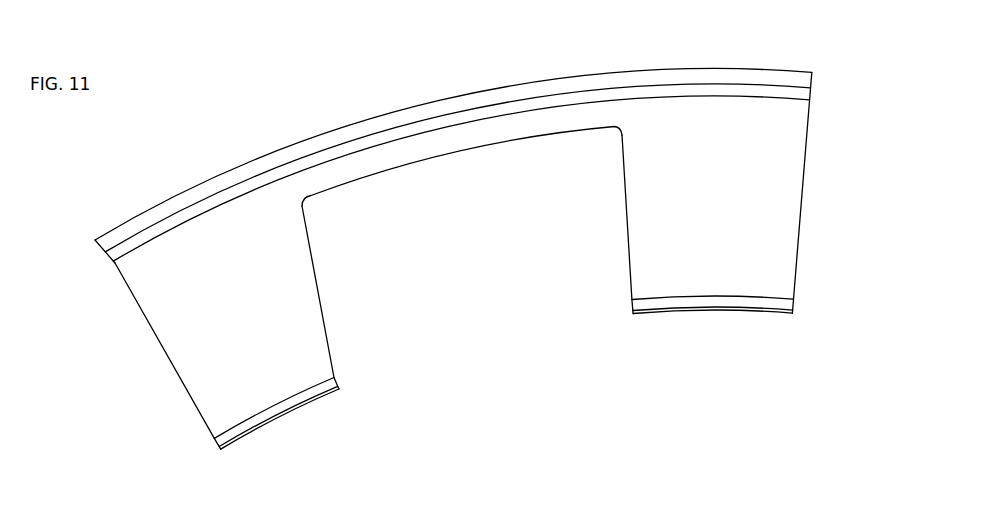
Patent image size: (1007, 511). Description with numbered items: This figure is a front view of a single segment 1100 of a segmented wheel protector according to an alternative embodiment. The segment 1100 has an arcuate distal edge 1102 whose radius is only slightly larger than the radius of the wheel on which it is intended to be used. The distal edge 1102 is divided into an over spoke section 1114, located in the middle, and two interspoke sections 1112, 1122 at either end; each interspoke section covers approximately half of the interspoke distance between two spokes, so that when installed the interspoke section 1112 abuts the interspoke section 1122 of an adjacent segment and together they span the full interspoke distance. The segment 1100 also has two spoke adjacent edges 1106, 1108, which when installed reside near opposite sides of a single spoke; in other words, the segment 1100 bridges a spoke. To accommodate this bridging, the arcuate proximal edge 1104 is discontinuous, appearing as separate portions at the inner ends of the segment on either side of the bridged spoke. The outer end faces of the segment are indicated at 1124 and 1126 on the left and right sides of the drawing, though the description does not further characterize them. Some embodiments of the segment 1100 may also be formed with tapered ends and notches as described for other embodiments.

The segment 1100 is at (477, 239).
The arcuate distal edge 1102 is at (432, 102).
The arcuate proximal edge 1104 is at (313, 399).
The spoke adjacent edge 1106 is at (323, 302).
The spoke adjacent edge 1108 is at (622, 247).
The interspoke section 1112 is at (138, 214).
The over spoke section 1114 is at (438, 150).
The interspoke section 1122 is at (786, 48).
The left side face 1124 is at (163, 353).
The right side face 1126 is at (805, 187).